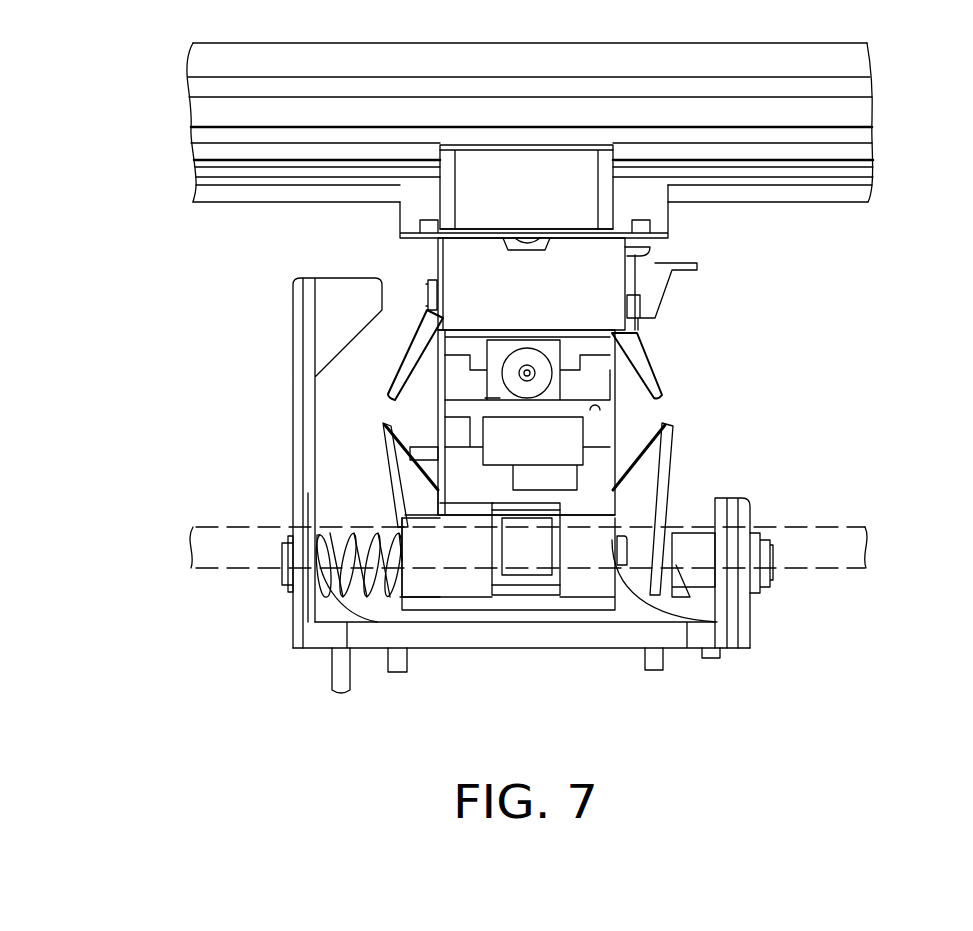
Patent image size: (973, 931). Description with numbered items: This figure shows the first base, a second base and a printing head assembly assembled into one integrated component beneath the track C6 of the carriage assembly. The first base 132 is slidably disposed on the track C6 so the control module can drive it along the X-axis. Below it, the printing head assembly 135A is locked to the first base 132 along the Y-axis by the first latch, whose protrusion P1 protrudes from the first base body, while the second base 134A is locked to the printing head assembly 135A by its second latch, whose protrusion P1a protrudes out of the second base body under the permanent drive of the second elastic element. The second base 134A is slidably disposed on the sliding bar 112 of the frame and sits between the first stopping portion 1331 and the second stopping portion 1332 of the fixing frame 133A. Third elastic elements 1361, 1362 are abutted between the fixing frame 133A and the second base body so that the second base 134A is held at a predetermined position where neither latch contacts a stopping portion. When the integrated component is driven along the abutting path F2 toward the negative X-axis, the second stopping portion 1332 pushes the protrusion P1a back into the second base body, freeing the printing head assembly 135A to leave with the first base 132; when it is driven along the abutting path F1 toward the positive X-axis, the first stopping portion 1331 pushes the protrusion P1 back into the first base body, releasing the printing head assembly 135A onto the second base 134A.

The track C6 is at (765, 42).
The first base 132 is at (610, 278).
The printing head assembly 135A is at (653, 422).
The first stopping portion 1331 is at (338, 285).
The second stopping portion 1332 is at (690, 540).
The fixing frame 133A is at (518, 640).
The second base 134A is at (448, 587).
The third elastic element 1361 is at (657, 533).
The third elastic element 1362 is at (353, 533).
The sliding bar 112 is at (872, 548).
The protrusion P1 is at (432, 282).
The protrusion P1a is at (620, 570).
The abutting path F1 is at (413, 298).
The abutting path F2 is at (647, 554).